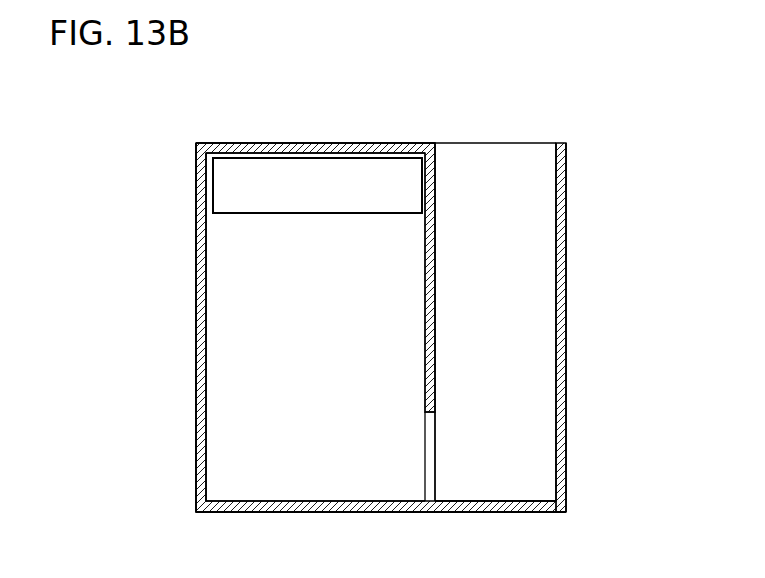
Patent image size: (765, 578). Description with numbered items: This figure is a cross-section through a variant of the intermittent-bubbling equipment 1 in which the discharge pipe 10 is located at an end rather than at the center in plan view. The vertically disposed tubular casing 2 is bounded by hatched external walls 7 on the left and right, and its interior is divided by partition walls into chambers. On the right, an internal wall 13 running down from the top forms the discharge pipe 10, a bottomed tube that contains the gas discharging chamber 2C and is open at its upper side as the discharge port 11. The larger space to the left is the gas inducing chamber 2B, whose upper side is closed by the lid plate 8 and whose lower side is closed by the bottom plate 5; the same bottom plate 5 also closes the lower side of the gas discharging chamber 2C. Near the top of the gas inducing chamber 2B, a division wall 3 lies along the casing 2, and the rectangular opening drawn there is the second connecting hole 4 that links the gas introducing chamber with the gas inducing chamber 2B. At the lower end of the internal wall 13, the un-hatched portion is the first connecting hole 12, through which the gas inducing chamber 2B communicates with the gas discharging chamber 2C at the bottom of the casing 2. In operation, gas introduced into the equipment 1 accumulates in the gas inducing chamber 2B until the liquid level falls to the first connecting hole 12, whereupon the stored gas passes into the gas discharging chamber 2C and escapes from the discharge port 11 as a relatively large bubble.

The intermittent-bubbling equipment 1 is at (577, 141).
The casing 2 is at (194, 276).
The gas inducing chamber 2B is at (213, 468).
The gas discharging chamber 2C is at (543, 466).
The division wall 3 is at (213, 412).
The second connecting hole 4 is at (275, 158).
The bottom plate 5 is at (278, 512).
The external wall 7 is at (201, 345).
The lid plate 8 is at (326, 144).
The discharge pipe 10 is at (571, 331).
The discharge port 11 is at (505, 143).
The first connecting hole 12 is at (432, 457).
The internal wall 13 is at (437, 160).